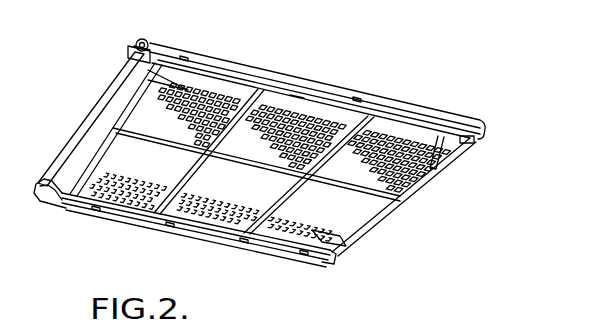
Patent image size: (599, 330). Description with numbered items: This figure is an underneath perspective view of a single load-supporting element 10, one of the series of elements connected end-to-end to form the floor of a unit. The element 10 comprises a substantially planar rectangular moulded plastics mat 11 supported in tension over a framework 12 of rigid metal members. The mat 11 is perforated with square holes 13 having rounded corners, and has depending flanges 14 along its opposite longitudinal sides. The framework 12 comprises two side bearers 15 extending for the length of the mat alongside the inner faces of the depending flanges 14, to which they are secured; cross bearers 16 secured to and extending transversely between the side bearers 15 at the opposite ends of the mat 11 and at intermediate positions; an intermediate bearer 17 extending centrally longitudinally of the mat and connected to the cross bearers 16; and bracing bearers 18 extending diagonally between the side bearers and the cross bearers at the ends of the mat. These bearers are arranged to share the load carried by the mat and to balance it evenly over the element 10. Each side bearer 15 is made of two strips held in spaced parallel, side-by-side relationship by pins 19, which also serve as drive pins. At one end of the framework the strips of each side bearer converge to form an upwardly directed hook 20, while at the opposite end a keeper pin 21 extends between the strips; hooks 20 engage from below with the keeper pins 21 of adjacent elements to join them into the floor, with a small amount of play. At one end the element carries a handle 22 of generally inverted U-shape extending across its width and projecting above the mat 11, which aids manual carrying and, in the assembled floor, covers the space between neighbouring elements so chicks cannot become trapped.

The load-supporting element 10 is at (337, 85).
The mat 11 is at (217, 55).
The framework 12 is at (403, 188).
The square holes 13 is at (300, 120).
The depending flanges 14 is at (388, 107).
The side bearers 15 is at (267, 90).
The cross bearers 16 is at (368, 220).
The intermediate bearer 17 is at (133, 132).
The bracing bearers 18 is at (448, 148).
The pins 19 is at (213, 66).
The hook 20 is at (138, 56).
The keeper pin 21 is at (468, 141).
The handle 22 is at (53, 165).